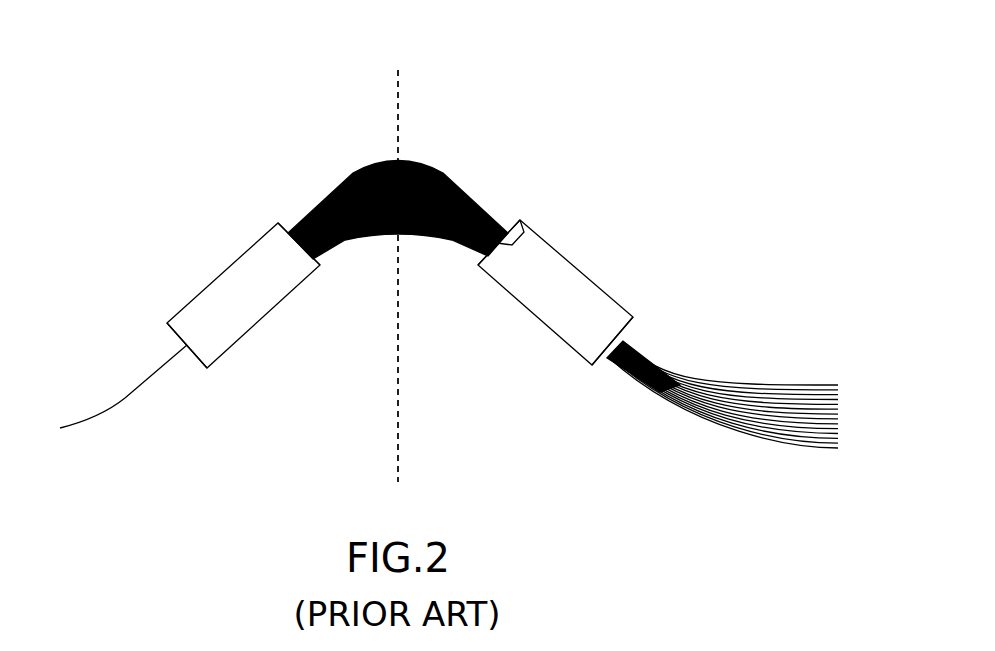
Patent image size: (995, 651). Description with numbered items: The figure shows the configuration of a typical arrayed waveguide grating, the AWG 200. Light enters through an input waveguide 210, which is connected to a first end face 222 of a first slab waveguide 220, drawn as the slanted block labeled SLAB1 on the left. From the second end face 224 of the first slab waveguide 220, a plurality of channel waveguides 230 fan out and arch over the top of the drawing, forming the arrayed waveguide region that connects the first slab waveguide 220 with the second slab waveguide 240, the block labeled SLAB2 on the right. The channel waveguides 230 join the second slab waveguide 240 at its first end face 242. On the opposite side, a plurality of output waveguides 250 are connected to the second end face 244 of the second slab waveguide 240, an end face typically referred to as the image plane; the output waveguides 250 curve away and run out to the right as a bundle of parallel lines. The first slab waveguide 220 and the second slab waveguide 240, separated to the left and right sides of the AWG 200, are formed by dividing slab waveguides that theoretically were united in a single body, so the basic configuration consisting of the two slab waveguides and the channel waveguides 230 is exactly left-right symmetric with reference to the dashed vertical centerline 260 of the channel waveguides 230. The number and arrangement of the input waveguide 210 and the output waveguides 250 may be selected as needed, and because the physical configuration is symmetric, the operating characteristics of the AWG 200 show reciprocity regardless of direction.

The AWG 200 is at (473, 40).
The input waveguide 210 is at (127, 398).
The first slab waveguide 220 is at (220, 255).
The first end face of the first slab waveguide 222 is at (172, 338).
The second end face of the first slab waveguide 224 is at (283, 222).
The channel waveguides 230 is at (437, 153).
The second slab waveguide 240 is at (587, 260).
The first end face of the second slab waveguide 242 is at (522, 222).
The second end face of the second slab waveguide 244 is at (627, 338).
The output waveguides 250 is at (773, 380).
The centerline 260 is at (402, 440).